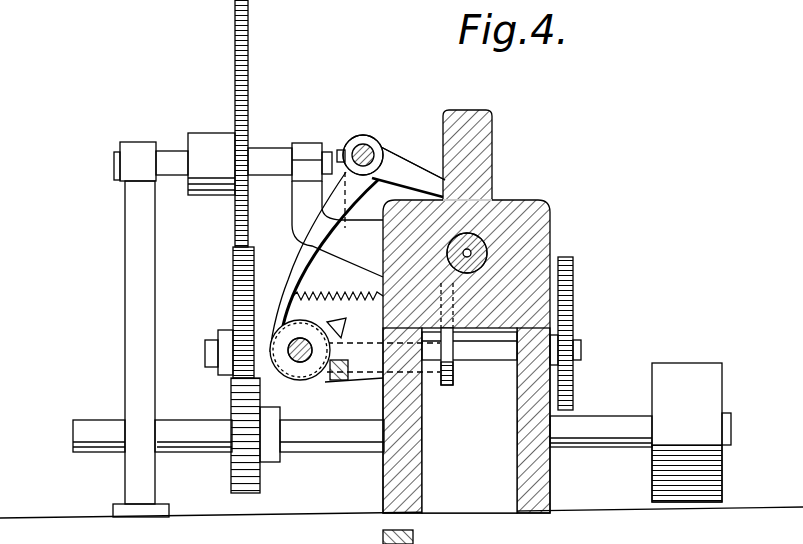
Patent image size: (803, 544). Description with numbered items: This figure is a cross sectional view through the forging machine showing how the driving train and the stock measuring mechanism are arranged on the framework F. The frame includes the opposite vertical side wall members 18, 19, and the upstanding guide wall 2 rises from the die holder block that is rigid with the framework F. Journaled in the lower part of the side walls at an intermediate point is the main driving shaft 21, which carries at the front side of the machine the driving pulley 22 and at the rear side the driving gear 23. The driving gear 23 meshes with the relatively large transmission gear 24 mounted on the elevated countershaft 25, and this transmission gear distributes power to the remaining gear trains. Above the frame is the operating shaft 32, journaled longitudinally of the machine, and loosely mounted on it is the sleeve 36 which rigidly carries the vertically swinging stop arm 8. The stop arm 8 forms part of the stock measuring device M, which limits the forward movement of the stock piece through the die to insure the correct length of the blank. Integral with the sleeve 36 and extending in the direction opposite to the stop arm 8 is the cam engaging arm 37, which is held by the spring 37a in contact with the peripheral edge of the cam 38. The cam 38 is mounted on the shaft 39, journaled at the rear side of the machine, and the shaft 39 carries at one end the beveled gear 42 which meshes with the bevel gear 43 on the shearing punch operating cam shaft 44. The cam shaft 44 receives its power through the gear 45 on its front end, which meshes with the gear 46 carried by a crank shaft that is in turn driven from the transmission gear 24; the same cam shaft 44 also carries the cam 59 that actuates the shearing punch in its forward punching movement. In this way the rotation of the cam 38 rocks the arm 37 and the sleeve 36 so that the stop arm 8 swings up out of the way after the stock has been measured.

The upstanding guide wall 2 is at (476, 165).
The stop arm 8 is at (430, 183).
The framework F is at (548, 208).
The stock measuring device M is at (378, 145).
The vertical side wall member 18 is at (386, 469).
The vertical side wall member 19 is at (544, 468).
The main driving shaft 21 is at (96, 424).
The driving pulley 22 is at (691, 432).
The driving gear 23 is at (235, 403).
The transmission gear 24 is at (234, 58).
The countershaft 25 is at (270, 158).
The operating shaft 32 is at (362, 143).
The sleeve 36 is at (393, 170).
The cam engaging arm 37 is at (306, 266).
The spring 37a is at (343, 293).
The cam 38 is at (313, 376).
The shaft 39 is at (296, 368).
The beveled gear 42 is at (291, 321).
The bevel gear 43 is at (337, 330).
The shearing punch operating cam shaft 44 is at (581, 349).
The gear 45 is at (574, 311).
The gear 46 is at (488, 254).
The cam 59 is at (452, 372).